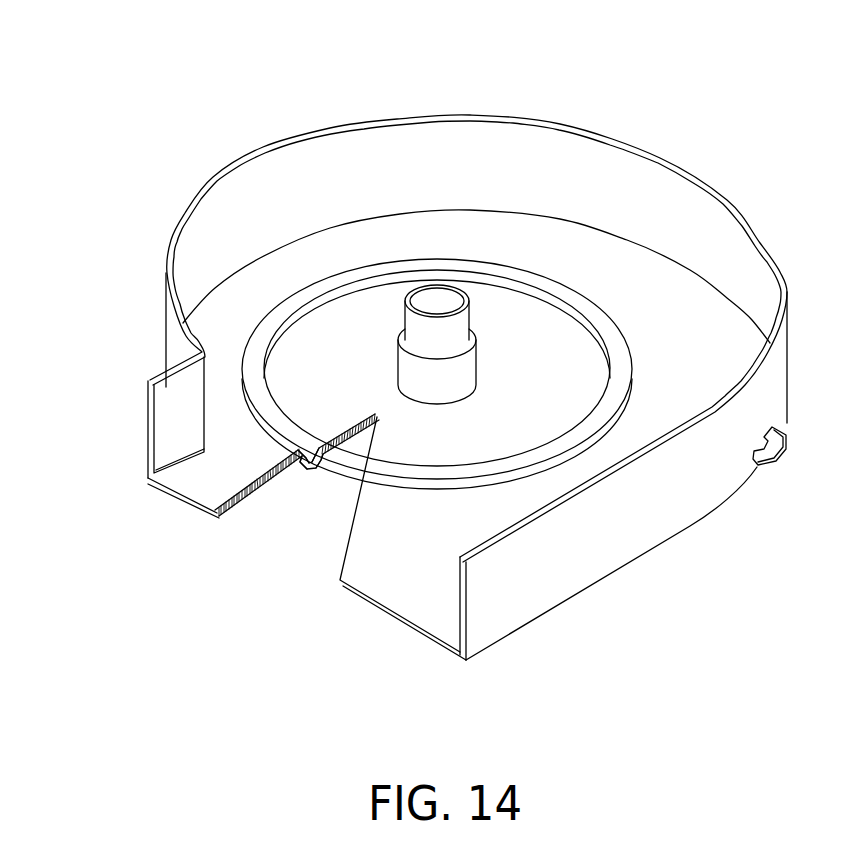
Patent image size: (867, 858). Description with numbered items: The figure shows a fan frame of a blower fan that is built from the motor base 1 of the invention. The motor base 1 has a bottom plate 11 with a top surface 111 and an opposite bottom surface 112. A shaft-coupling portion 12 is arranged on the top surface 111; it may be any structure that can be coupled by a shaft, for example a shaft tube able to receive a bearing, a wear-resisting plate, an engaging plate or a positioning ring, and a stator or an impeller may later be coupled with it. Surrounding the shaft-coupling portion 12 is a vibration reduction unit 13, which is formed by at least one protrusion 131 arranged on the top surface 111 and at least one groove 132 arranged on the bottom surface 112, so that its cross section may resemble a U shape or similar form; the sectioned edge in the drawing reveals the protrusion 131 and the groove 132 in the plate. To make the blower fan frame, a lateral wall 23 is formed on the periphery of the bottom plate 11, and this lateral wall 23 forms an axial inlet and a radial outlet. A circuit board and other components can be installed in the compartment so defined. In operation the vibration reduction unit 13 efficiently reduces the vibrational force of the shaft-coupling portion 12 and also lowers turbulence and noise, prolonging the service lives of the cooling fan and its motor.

The motor base 1 is at (683, 93).
The bottom plate 11 is at (202, 508).
The top surface 111 is at (210, 488).
The bottom surface 112 is at (227, 508).
The shaft-coupling portion 12 is at (410, 322).
The vibration reduction unit 13 is at (335, 663).
The protrusion 131 is at (287, 452).
The groove 132 is at (310, 455).
The lateral wall 23 is at (563, 550).